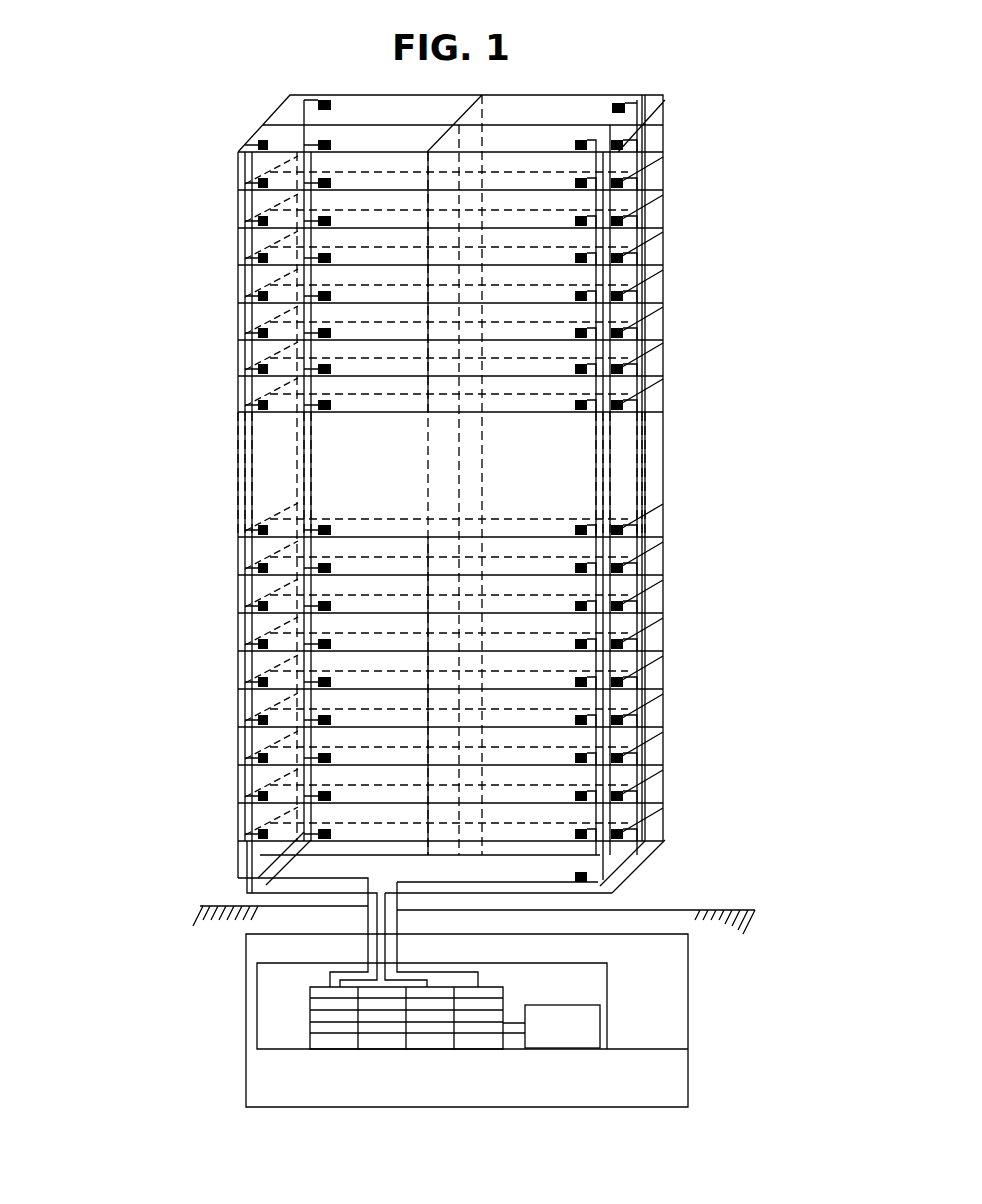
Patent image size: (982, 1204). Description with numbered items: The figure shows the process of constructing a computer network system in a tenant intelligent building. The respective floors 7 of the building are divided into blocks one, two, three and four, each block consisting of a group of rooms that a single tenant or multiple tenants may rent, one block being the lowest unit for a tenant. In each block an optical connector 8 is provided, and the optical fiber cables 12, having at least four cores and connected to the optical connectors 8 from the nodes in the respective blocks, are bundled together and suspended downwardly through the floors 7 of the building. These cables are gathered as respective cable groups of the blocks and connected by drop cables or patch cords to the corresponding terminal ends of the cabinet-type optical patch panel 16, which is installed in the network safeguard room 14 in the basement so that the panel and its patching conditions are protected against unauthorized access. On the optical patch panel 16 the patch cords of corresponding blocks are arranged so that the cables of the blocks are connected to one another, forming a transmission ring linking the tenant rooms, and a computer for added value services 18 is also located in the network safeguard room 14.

The floor 7 is at (598, 110).
The optical connector 8 is at (300, 106).
The group of optical fiber cables 12 is at (250, 318).
The network safeguard room 14 is at (257, 972).
The optical patch panel 16 is at (310, 1003).
The computer for added value services 18 is at (600, 1040).